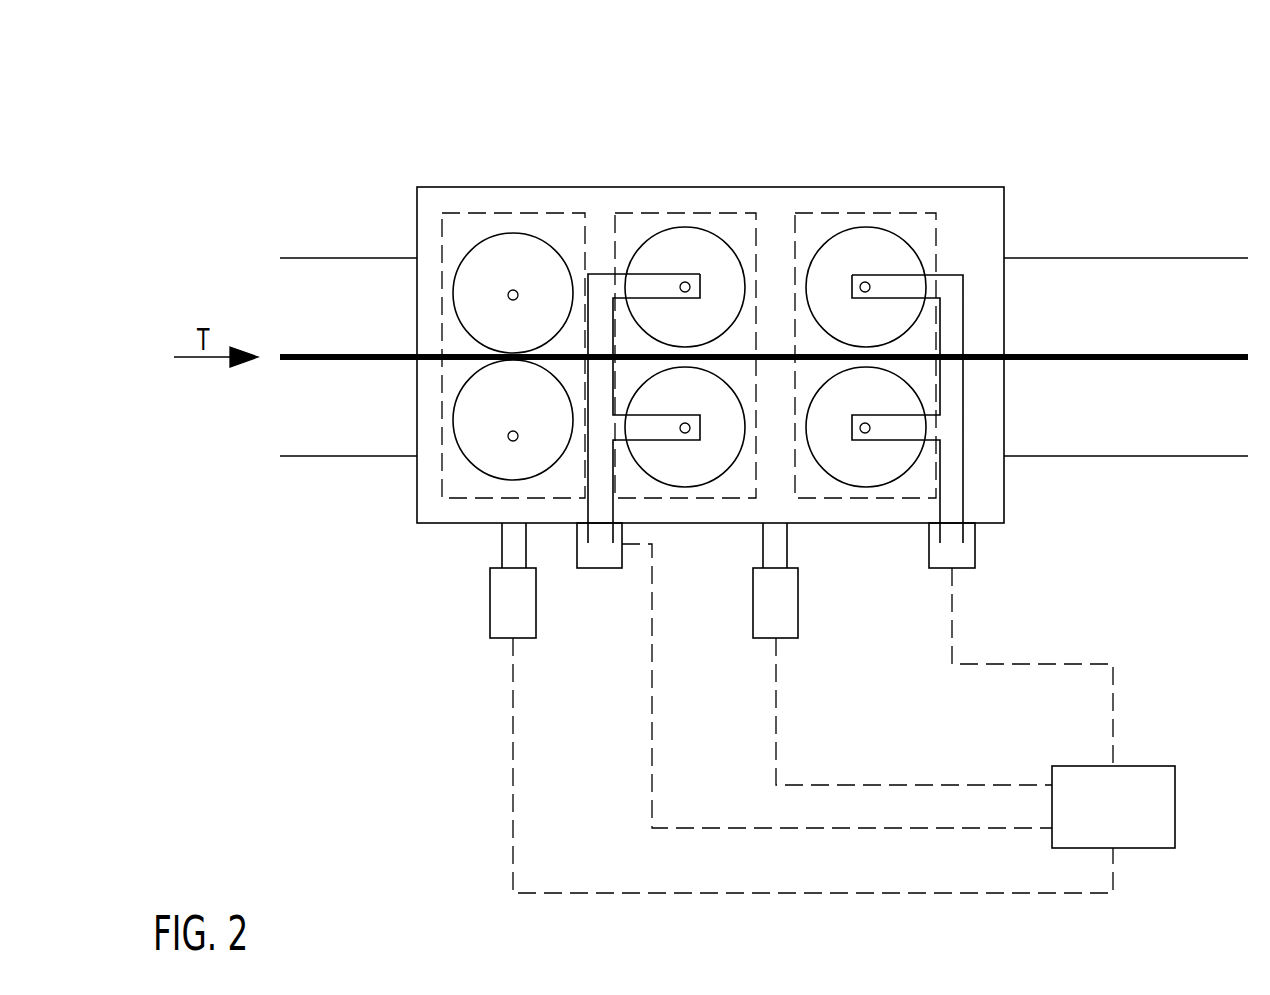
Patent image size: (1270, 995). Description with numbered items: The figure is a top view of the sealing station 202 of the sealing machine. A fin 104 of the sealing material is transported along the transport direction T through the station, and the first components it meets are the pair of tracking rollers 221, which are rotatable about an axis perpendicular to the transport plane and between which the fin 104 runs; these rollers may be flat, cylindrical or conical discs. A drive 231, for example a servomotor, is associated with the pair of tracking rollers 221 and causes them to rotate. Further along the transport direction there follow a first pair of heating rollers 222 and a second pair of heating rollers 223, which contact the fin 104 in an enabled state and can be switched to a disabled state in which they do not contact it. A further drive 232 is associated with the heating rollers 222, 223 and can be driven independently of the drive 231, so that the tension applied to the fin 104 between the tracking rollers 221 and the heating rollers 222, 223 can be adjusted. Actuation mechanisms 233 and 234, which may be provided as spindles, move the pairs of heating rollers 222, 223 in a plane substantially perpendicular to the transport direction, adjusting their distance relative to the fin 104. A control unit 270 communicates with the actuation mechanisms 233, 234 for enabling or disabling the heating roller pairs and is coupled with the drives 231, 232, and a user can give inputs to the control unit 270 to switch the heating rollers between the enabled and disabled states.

The fin of the sealing material 104 is at (1183, 354).
The sealing station 202 is at (803, 122).
The pair of tracking rollers 221 is at (498, 203).
The first pair of heating rollers 222 is at (671, 203).
The second pair of heating rollers 223 is at (851, 203).
The drive 231 is at (490, 599).
The further drive 232 is at (793, 599).
The actuation mechanism 233 is at (965, 550).
The actuation mechanism 234 is at (600, 568).
The control unit 270 is at (1145, 778).